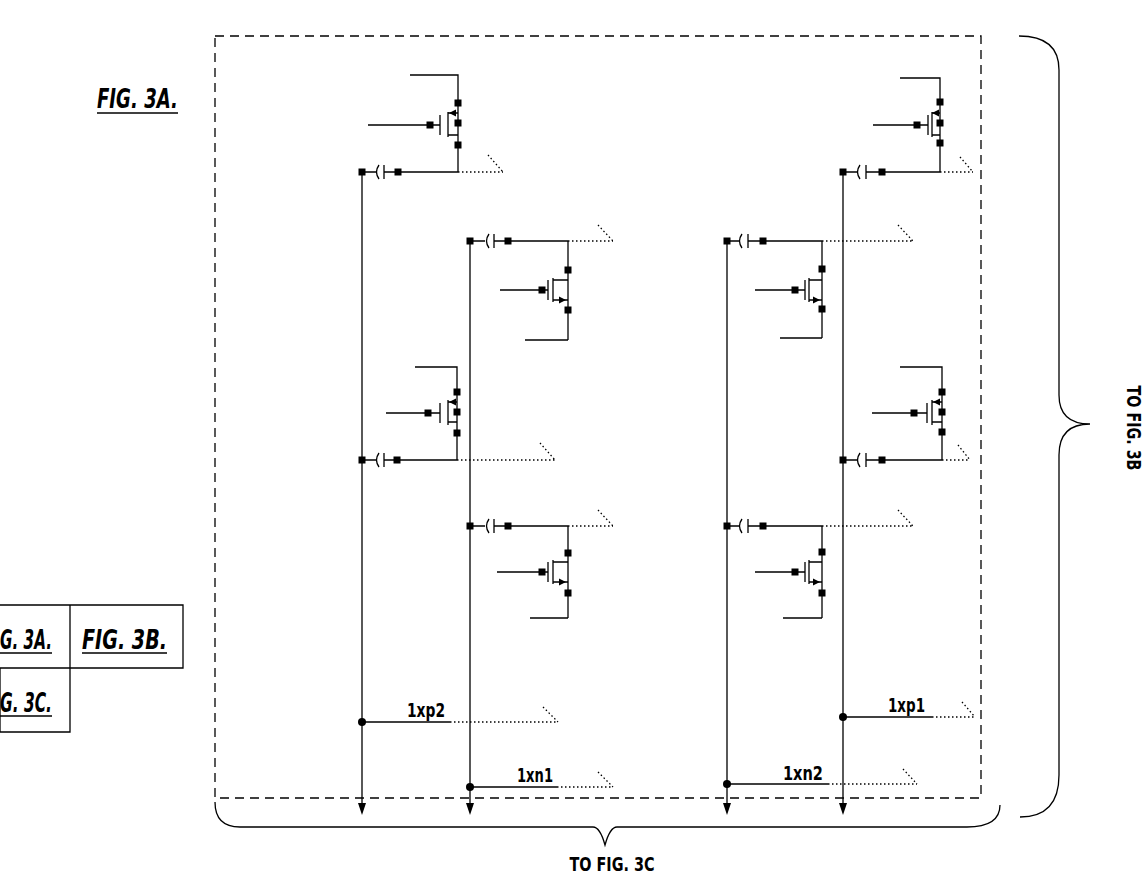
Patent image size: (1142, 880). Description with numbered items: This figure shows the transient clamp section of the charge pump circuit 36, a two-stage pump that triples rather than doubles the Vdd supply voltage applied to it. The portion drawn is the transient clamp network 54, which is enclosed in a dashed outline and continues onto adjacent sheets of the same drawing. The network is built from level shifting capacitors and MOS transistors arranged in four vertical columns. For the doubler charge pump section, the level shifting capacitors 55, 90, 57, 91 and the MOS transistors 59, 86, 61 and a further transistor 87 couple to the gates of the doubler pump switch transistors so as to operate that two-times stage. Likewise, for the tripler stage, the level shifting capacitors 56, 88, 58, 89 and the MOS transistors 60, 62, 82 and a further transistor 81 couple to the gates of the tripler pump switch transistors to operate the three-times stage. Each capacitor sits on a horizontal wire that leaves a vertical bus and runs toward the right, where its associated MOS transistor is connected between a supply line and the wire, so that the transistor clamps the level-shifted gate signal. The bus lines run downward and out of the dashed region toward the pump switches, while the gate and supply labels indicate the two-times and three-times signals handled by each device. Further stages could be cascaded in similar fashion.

The charge pump circuit 36 is at (101, 267).
The transient clamp network 54 is at (214, 395).
The level shifting capacitor 55 is at (487, 537).
The level shifting capacitor 56 is at (487, 250).
The level shifting capacitor 57 is at (742, 537).
The level shifting capacitor 58 is at (742, 250).
The MOS transistor 59 is at (548, 577).
The MOS transistor 60 is at (548, 292).
The MOS transistor 61 is at (805, 578).
The MOS transistor 62 is at (805, 296).
The PMOS transistor 81 is at (446, 138).
The MOS transistor 82 is at (933, 138).
The MOS transistor 86 is at (440, 402).
The PMOS transistor 87 is at (927, 402).
The level shifting capacitor 88 is at (380, 180).
The level shifting capacitor 89 is at (862, 165).
The level shifting capacitor 90 is at (377, 468).
The level shifting capacitor 91 is at (862, 453).